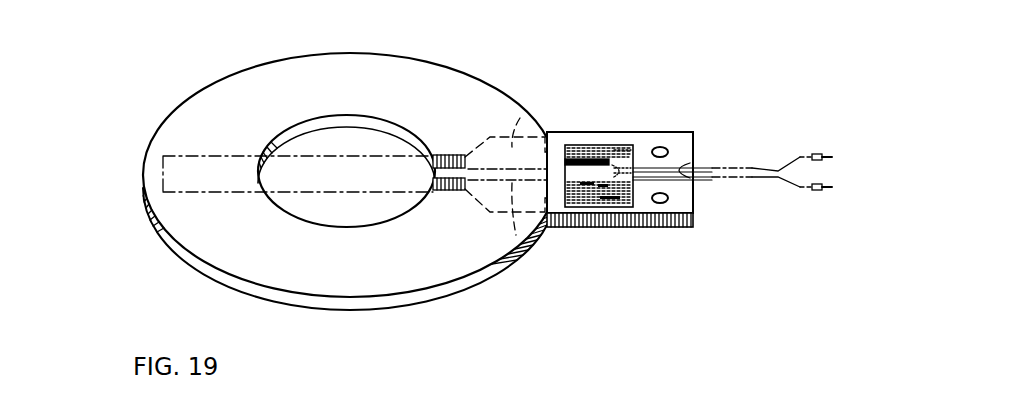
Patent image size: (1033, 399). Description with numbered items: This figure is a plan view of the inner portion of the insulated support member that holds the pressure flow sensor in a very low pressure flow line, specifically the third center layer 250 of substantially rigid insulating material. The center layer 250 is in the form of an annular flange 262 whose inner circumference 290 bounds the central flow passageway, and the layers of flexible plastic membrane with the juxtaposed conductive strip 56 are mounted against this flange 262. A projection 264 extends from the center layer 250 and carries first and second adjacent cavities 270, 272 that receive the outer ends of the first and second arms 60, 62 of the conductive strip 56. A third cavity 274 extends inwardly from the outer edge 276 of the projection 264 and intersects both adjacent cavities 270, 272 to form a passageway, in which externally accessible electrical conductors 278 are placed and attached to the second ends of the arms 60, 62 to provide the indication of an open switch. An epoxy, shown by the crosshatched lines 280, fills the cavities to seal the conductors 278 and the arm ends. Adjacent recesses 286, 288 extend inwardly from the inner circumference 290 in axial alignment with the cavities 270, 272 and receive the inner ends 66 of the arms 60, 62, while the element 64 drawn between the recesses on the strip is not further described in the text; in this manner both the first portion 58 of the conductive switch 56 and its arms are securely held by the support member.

The third center layer 250 is at (448, 155).
The annular flange 262 is at (353, 156).
The inner circumference 290 is at (320, 118).
The conductive strip 56 is at (315, 162).
The first portion 58 is at (185, 177).
The shaft neck 64 is at (437, 173).
The inner ends 66 is at (440, 152).
The recess 286 is at (457, 153).
The recess 288 is at (458, 193).
The first arm 60 is at (675, 174).
The second arm 62 is at (518, 250).
The projection 264 is at (645, 132).
The first cavity 270 is at (603, 186).
The second cavity 272 is at (610, 207).
The epoxy 280 is at (585, 207).
The third cavity 274 is at (693, 167).
The outer edge 276 is at (697, 160).
The electrical conductors 278 is at (730, 182).